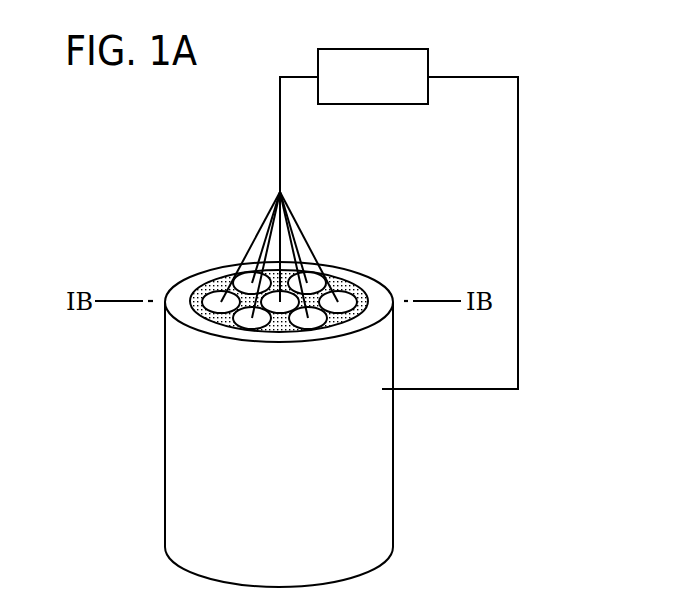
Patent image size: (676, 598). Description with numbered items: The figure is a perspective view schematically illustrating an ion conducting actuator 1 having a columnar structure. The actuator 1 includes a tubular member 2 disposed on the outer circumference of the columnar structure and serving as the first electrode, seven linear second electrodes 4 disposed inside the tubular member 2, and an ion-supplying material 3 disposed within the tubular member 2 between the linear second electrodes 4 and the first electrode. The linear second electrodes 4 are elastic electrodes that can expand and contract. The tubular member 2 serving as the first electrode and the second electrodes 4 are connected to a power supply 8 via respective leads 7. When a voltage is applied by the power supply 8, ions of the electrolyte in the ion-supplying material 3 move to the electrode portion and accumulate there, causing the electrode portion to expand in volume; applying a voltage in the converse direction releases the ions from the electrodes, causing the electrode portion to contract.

The ion conducting actuator 1 is at (283, 390).
The tubular member 2 is at (375, 463).
The ion-supplying material 3 is at (193, 283).
The linear second electrodes 4 is at (213, 280).
The leads 7 is at (278, 143).
The power supply 8 is at (385, 49).